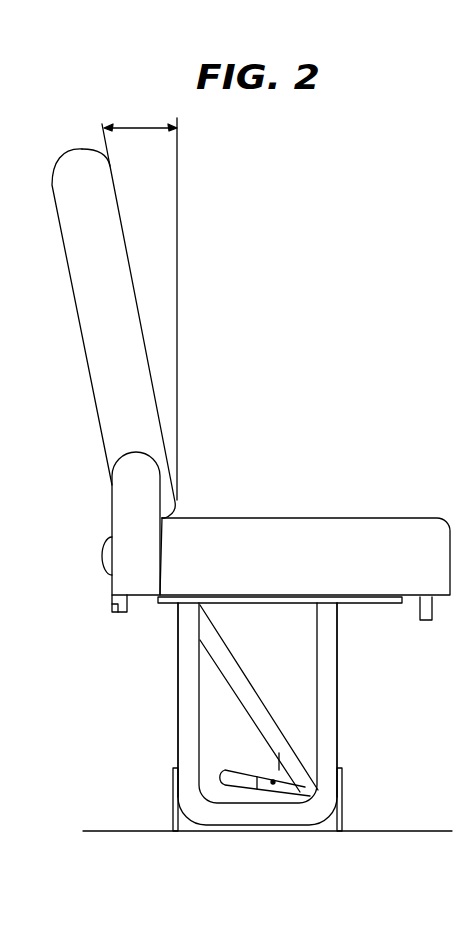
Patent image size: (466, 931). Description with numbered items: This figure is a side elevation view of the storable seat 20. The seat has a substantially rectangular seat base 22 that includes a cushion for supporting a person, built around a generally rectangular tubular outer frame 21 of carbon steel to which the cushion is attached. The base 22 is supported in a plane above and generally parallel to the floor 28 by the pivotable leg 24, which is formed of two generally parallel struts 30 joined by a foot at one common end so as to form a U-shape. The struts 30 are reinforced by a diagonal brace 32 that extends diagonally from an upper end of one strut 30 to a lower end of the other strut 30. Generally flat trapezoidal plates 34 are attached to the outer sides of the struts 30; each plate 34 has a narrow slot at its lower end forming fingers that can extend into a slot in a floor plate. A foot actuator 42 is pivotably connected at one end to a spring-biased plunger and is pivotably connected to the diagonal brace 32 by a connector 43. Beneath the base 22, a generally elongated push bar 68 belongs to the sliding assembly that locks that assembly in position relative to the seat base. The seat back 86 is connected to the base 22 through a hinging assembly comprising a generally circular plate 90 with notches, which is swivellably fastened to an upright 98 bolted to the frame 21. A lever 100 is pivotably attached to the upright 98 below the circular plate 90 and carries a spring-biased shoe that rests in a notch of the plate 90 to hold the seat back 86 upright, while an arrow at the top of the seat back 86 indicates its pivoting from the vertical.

The storable seat 20 is at (257, 268).
The tubular outer frame 21 is at (358, 604).
The seat base 22 is at (403, 514).
The pivotable leg 24 is at (341, 690).
The floor 28 is at (103, 830).
The struts 30 is at (181, 695).
The diagonal brace 32 is at (249, 688).
The trapezoidal plates 34 is at (175, 803).
The foot actuator 42 is at (232, 773).
The connector 43 is at (285, 771).
The push bar 68 is at (432, 612).
The seat back 86 is at (95, 375).
The circular plate 90 is at (101, 553).
The upright 98 is at (122, 512).
The lever 100 is at (114, 609).